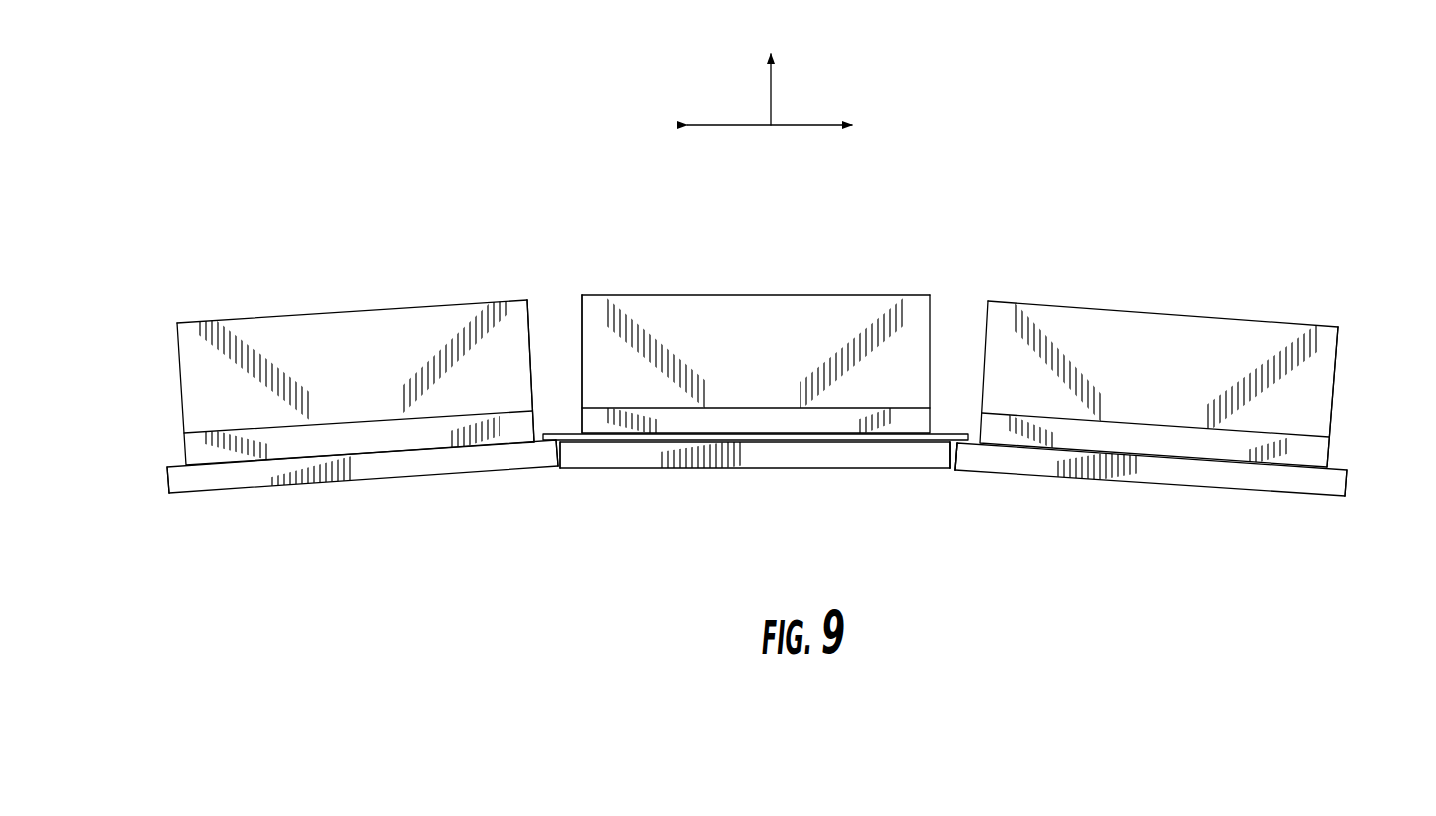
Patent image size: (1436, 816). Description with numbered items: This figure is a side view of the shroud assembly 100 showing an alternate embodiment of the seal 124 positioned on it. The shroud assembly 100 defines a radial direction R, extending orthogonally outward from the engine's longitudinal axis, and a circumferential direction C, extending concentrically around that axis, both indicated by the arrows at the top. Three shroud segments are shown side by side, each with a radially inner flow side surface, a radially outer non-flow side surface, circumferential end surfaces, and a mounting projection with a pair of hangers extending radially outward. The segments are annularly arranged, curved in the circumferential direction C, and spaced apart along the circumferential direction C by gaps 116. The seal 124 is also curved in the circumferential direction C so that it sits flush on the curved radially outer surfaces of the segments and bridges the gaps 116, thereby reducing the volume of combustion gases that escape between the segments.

The shroud assembly 100 is at (186, 220).
The gap 116 is at (952, 471).
The seal 124 is at (694, 434).
The circumferential direction C is at (727, 123).
The radial direction R is at (773, 98).